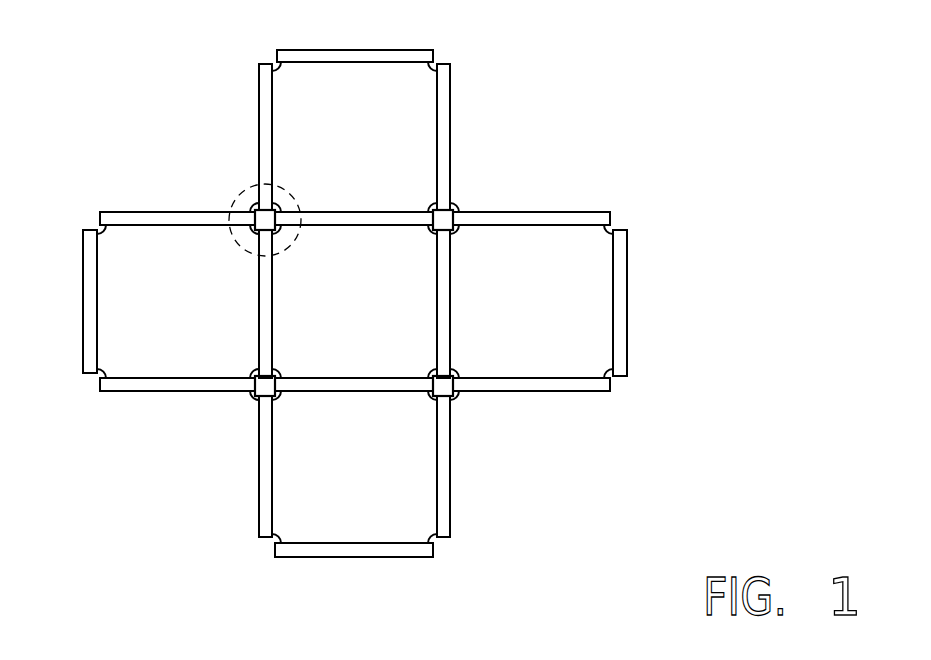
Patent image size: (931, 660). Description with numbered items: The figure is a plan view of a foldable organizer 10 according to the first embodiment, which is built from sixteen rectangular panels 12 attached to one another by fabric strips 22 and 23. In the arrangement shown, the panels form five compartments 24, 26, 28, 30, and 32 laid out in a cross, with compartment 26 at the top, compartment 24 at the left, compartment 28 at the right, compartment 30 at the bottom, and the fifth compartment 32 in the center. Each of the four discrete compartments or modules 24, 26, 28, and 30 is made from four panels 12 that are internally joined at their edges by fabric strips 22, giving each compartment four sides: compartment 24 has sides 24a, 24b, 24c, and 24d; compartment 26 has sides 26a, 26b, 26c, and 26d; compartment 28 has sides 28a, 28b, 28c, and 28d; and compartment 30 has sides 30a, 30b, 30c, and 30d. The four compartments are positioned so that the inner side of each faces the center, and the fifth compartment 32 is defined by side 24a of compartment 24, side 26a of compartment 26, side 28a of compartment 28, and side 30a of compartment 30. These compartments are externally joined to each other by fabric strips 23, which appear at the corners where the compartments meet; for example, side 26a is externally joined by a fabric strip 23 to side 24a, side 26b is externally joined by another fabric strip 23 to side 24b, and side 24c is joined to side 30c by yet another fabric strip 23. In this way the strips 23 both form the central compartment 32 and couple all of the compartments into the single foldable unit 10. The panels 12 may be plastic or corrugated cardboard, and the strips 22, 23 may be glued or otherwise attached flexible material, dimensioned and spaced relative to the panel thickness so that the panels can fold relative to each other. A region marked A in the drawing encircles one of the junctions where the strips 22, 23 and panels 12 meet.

The foldable organizer 10 is at (557, 513).
The rectangular panel 12 is at (356, 307).
The fabric strip 22 is at (276, 70).
The fabric strip 23 is at (250, 208).
The compartment 24 is at (177, 300).
The side of compartment 24 24a is at (270, 333).
The side of compartment 24 24b is at (110, 212).
The side of compartment 24 24c is at (113, 392).
The side of compartment 24 24d is at (83, 290).
The compartment 26 is at (353, 107).
The side of compartment 26 26a is at (345, 225).
The side of compartment 26 26b is at (259, 100).
The side of compartment 26 26c is at (444, 135).
The side of compartment 26 26d is at (340, 30).
The compartment 28 is at (573, 302).
The side of compartment 28 28a is at (450, 293).
The side of compartment 28 28b is at (578, 392).
The side of compartment 28 28c is at (560, 212).
The side of compartment 28 28d is at (620, 262).
The compartment 30 is at (354, 502).
The side of compartment 30 30a is at (364, 393).
The side of compartment 30 30b is at (450, 470).
The side of compartment 30 30c is at (259, 484).
The side of compartment 30 30d is at (385, 557).
The fifth compartment 32 is at (394, 336).
The detail area A is at (228, 205).